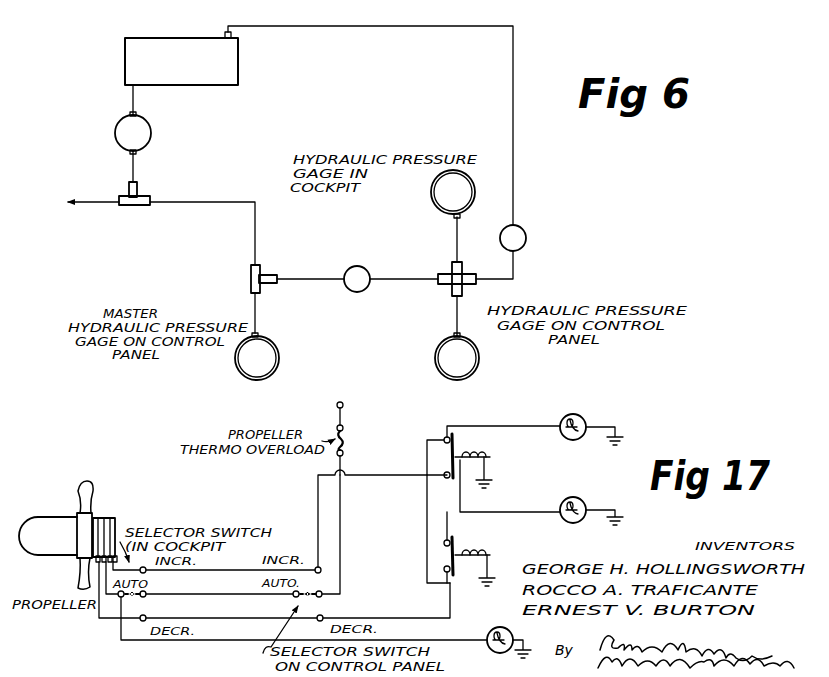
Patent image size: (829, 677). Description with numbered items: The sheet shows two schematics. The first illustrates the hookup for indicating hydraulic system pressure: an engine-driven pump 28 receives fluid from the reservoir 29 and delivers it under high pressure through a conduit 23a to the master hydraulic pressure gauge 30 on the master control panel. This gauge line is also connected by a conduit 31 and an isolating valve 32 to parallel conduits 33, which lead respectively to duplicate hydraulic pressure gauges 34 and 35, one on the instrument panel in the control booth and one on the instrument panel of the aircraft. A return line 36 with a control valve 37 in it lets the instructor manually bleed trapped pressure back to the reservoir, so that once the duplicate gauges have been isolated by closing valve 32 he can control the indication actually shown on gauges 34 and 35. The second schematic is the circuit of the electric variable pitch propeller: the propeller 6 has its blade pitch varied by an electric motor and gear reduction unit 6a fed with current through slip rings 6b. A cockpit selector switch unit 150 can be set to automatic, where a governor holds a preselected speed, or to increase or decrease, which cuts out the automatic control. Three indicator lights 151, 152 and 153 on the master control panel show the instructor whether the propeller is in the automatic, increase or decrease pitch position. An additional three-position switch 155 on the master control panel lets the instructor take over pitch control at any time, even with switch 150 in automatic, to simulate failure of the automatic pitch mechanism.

In FIG. 6, the pump 28 is at (152, 130).
In FIG. 6, the reservoir 29 is at (207, 86).
In FIG. 6, the conduit 23a is at (177, 204).
In FIG. 6, the master hydraulic pressure gauge 30 is at (278, 352).
In FIG. 6, the conduit 31 is at (315, 278).
In FIG. 6, the isolating valve 32 is at (359, 292).
In FIG. 6, the parallel conduits 33 is at (456, 247).
In FIG. 6, the hydraulic pressure gauge 34 is at (433, 360).
In FIG. 6, the hydraulic pressure gauge 35 is at (478, 197).
In FIG. 6, the return line 36 is at (516, 261).
In FIG. 6, the control valve 37 is at (527, 238).
In FIG. 17, the propeller 6 is at (79, 492).
In FIG. 17, the electric motor and gear reduction unit 6a is at (40, 546).
In FIG. 17, the slip rings 6b is at (103, 517).
In FIG. 17, the selector switch unit 150 is at (150, 592).
In FIG. 17, the indicator light 151 is at (581, 420).
In FIG. 17, the indicator light 152 is at (583, 504).
In FIG. 17, the indicator light 153 is at (510, 633).
In FIG. 17, the three-position switch 155 is at (333, 605).